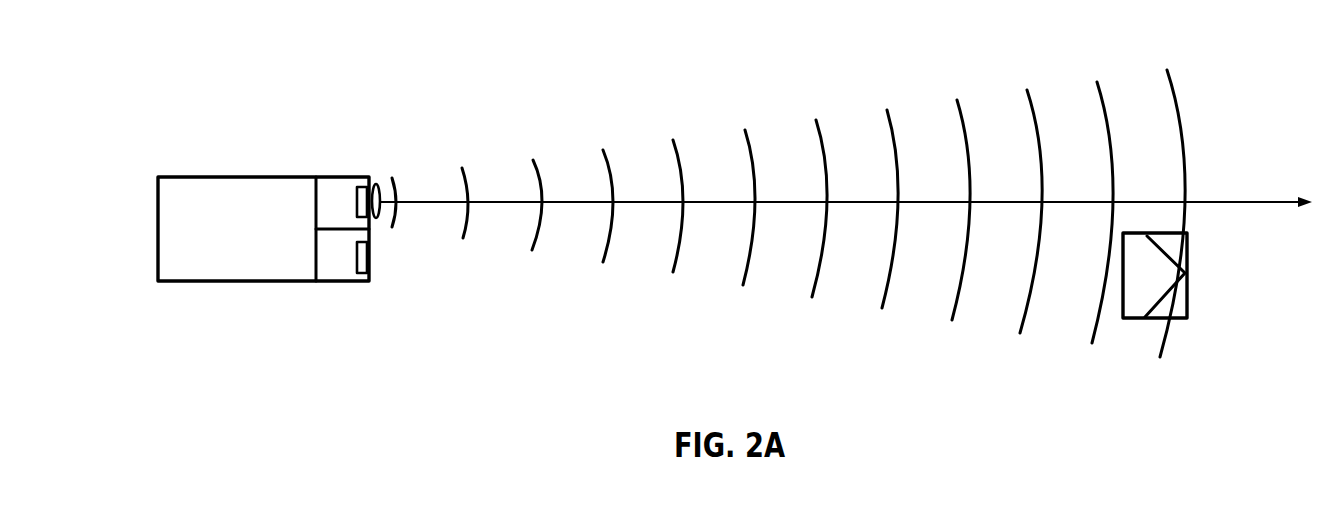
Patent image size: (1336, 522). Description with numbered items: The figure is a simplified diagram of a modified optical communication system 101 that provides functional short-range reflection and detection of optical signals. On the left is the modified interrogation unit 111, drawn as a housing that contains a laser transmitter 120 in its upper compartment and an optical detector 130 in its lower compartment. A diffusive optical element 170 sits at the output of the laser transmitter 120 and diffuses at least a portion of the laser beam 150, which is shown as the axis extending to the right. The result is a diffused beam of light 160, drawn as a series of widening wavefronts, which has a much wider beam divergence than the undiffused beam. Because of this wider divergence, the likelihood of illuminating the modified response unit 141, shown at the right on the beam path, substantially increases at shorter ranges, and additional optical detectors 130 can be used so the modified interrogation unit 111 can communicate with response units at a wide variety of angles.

The modified optical communication system 101 is at (143, 114).
The modified interrogation unit 111 is at (183, 283).
The laser transmitter 120 is at (340, 177).
The optical detector 130 is at (342, 283).
The diffusive optical element 170 is at (375, 180).
The laser beam 150 is at (772, 202).
The diffused beam of light 160 is at (673, 272).
The modified response unit 141 is at (1187, 264).